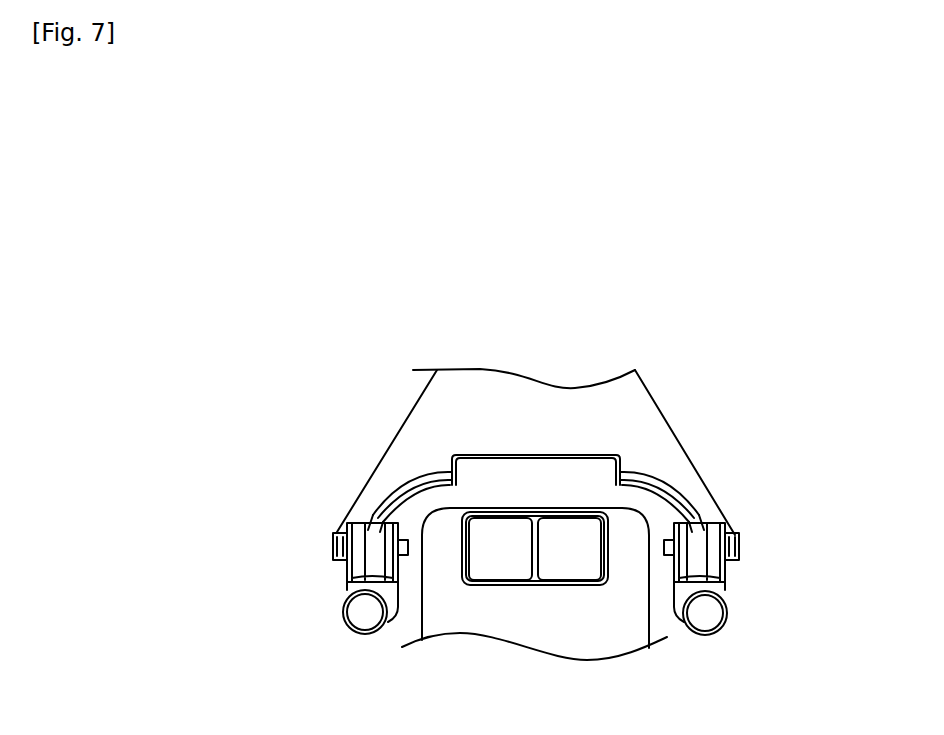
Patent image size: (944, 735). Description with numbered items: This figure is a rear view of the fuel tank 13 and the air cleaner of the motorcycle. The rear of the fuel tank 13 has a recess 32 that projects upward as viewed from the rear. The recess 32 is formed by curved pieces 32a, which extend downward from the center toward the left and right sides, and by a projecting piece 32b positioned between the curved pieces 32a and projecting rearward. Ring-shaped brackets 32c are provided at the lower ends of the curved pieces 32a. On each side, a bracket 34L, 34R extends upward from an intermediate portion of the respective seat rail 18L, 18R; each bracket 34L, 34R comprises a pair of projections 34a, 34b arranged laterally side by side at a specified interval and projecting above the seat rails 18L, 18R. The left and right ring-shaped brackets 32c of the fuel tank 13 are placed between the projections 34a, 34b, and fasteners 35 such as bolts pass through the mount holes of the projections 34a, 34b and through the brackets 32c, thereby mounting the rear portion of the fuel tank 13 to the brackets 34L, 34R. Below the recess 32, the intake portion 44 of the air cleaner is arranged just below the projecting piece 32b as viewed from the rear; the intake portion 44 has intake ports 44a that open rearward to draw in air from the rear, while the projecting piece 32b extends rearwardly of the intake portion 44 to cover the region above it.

The fuel tank 13 is at (390, 407).
The recess 32 is at (540, 406).
The curved pieces 32a is at (393, 465).
The projecting piece 32b is at (543, 453).
The ring-shaped brackets 32c is at (368, 512).
The left bracket 34L is at (302, 573).
The right bracket 34R is at (828, 558).
The projection 34a is at (347, 587).
The projection 34b is at (357, 577).
The fasteners 35 is at (333, 537).
The left seat rail 18L is at (353, 633).
The right seat rail 18R is at (723, 633).
The intake portion 44 is at (534, 609).
The intake ports 44a is at (488, 568).